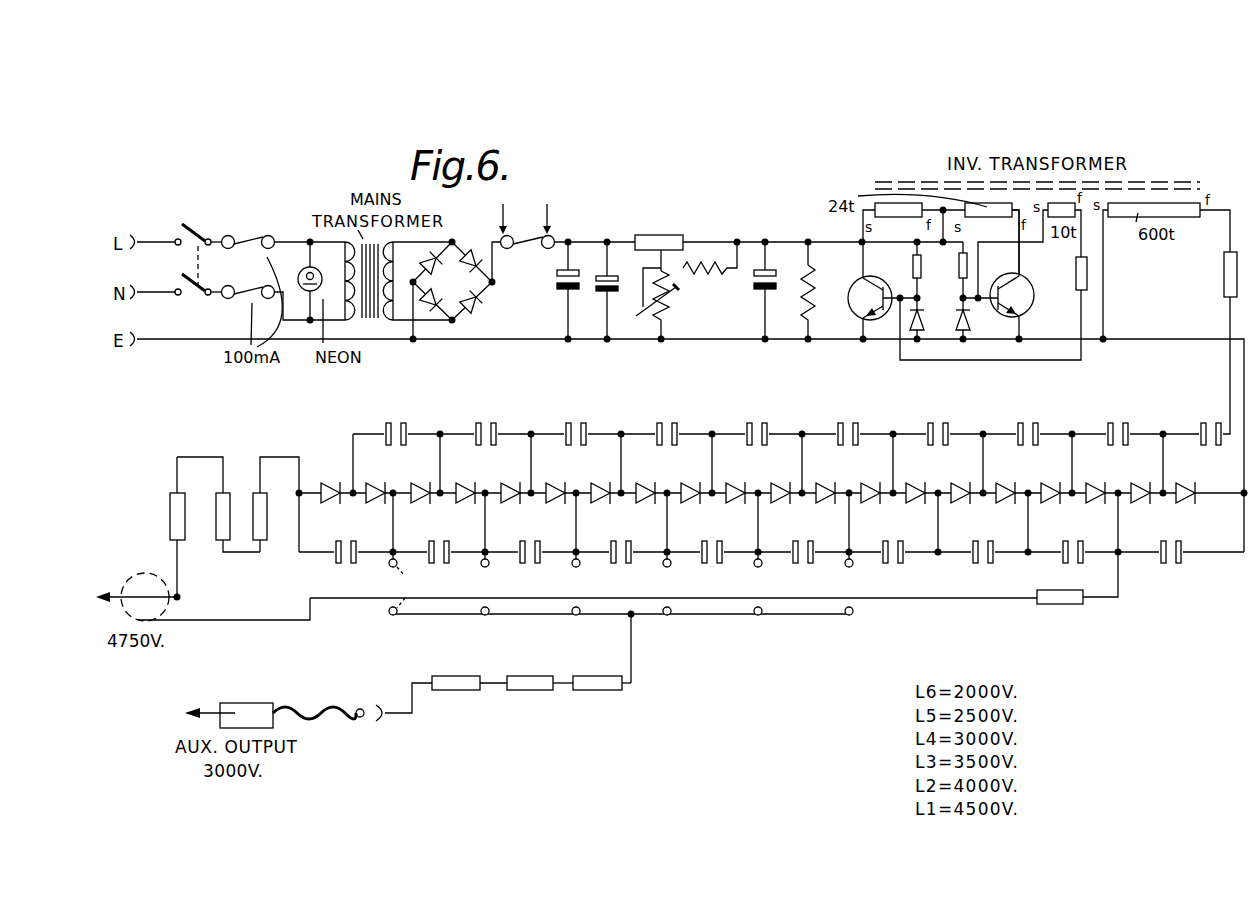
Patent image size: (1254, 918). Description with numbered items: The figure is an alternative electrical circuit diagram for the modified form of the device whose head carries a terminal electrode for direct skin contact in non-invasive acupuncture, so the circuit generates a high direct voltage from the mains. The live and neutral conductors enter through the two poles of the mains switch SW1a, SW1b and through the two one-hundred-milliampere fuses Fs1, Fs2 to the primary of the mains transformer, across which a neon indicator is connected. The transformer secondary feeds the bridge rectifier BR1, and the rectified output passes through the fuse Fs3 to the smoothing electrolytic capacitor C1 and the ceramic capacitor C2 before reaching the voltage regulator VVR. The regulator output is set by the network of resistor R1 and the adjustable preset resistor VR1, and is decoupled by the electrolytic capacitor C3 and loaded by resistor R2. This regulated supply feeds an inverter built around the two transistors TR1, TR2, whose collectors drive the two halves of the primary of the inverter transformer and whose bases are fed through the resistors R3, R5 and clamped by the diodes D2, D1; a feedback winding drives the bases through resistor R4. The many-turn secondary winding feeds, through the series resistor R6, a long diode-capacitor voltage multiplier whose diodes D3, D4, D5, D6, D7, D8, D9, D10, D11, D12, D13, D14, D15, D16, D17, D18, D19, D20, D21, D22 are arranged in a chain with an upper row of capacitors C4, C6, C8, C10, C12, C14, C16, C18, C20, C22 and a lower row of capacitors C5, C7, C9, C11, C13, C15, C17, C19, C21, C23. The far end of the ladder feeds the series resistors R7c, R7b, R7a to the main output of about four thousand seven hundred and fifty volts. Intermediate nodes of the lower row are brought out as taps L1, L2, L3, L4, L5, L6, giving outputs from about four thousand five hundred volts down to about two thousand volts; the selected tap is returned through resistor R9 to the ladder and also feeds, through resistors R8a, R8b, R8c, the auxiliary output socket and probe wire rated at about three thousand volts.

The mains switch pole SW1a is at (195, 244).
The mains switch pole SW1b is at (194, 297).
The fuse Fs1 is at (248, 230).
The fuse Fs2 is at (248, 281).
The fuse Fs3 is at (526, 229).
The bridge rectifier BR1 is at (455, 291).
The electrolytic capacitor C1 is at (559, 292).
The ceramic capacitor C2 is at (614, 292).
The electrolytic capacitor C3 is at (758, 292).
The voltage regulator VVR is at (659, 233).
The resistor R1 is at (710, 266).
The adjustable resistor VR1 is at (670, 296).
The resistor R2 is at (820, 292).
The transistor TR1 is at (870, 276).
The transistor TR2 is at (1013, 276).
The resistor R3 is at (904, 270).
The resistor R4 is at (993, 308).
The resistor R5 is at (952, 270).
The resistor R6 is at (1217, 343).
The diode D1 is at (979, 320).
The diode D2 is at (903, 325).
The diode D3 is at (1184, 483).
The diode D4 is at (1139, 483).
The diode D5 is at (1094, 483).
The diode D6 is at (1049, 483).
The diode D7 is at (1004, 483).
The diode D8 is at (959, 483).
The diode D9 is at (914, 483).
The diode D10 is at (869, 483).
The diode D11 is at (824, 483).
The diode D12 is at (779, 483).
The diode D13 is at (734, 483).
The diode D14 is at (689, 483).
The diode D15 is at (644, 483).
The diode D16 is at (599, 483).
The diode D17 is at (554, 483).
The diode D18 is at (509, 483).
The diode D19 is at (464, 483).
The diode D20 is at (419, 483).
The diode D21 is at (374, 483).
The diode D22 is at (329, 483).
The ceramic capacitor C4 is at (1210, 425).
The ceramic capacitor C5 is at (1171, 543).
The ceramic capacitor C6 is at (1118, 425).
The ceramic capacitor C7 is at (1073, 543).
The ceramic capacitor C8 is at (1028, 425).
The ceramic capacitor C9 is at (983, 543).
The ceramic capacitor C10 is at (938, 425).
The ceramic capacitor C11 is at (893, 543).
The ceramic capacitor C12 is at (848, 425).
The ceramic capacitor C13 is at (803, 543).
The ceramic capacitor C14 is at (757, 425).
The ceramic capacitor C15 is at (712, 543).
The ceramic capacitor C16 is at (667, 425).
The ceramic capacitor C17 is at (621, 543).
The ceramic capacitor C18 is at (576, 425).
The ceramic capacitor C19 is at (530, 543).
The ceramic capacitor C20 is at (486, 425).
The ceramic capacitor C21 is at (439, 543).
The ceramic capacitor C22 is at (396, 425).
The capacitor C23 is at (346, 543).
The resistor R7a is at (159, 527).
The resistor R7b is at (218, 508).
The resistor R7c is at (267, 540).
The resistor R8a is at (602, 671).
The resistor R8b is at (540, 671).
The resistor R8c is at (446, 683).
The resistor R9 is at (1077, 591).
The voltage tap L1 is at (401, 587).
The voltage tap L2 is at (487, 587).
The voltage tap L3 is at (577, 587).
The voltage tap L4 is at (668, 587).
The voltage tap L5 is at (758, 587).
The voltage tap L6 is at (849, 587).